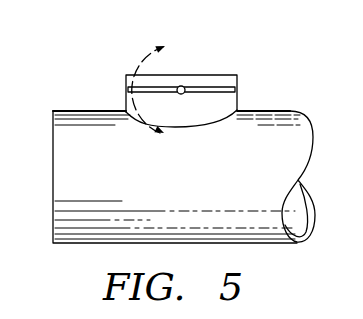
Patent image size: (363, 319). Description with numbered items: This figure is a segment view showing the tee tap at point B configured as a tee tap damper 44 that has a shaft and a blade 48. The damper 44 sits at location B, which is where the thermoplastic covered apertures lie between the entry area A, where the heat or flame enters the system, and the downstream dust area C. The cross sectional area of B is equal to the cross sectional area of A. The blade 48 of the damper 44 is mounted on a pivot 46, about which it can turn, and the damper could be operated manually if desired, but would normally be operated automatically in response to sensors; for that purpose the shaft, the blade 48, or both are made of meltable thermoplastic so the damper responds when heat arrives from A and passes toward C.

The tee tap damper 44 is at (120, 92).
The pivot pin 46 is at (187, 82).
The blade 48 is at (237, 90).
The heat or flame entry point A is at (166, 177).
The tee tap location B is at (166, 77).
The downstream dust area C is at (317, 204).